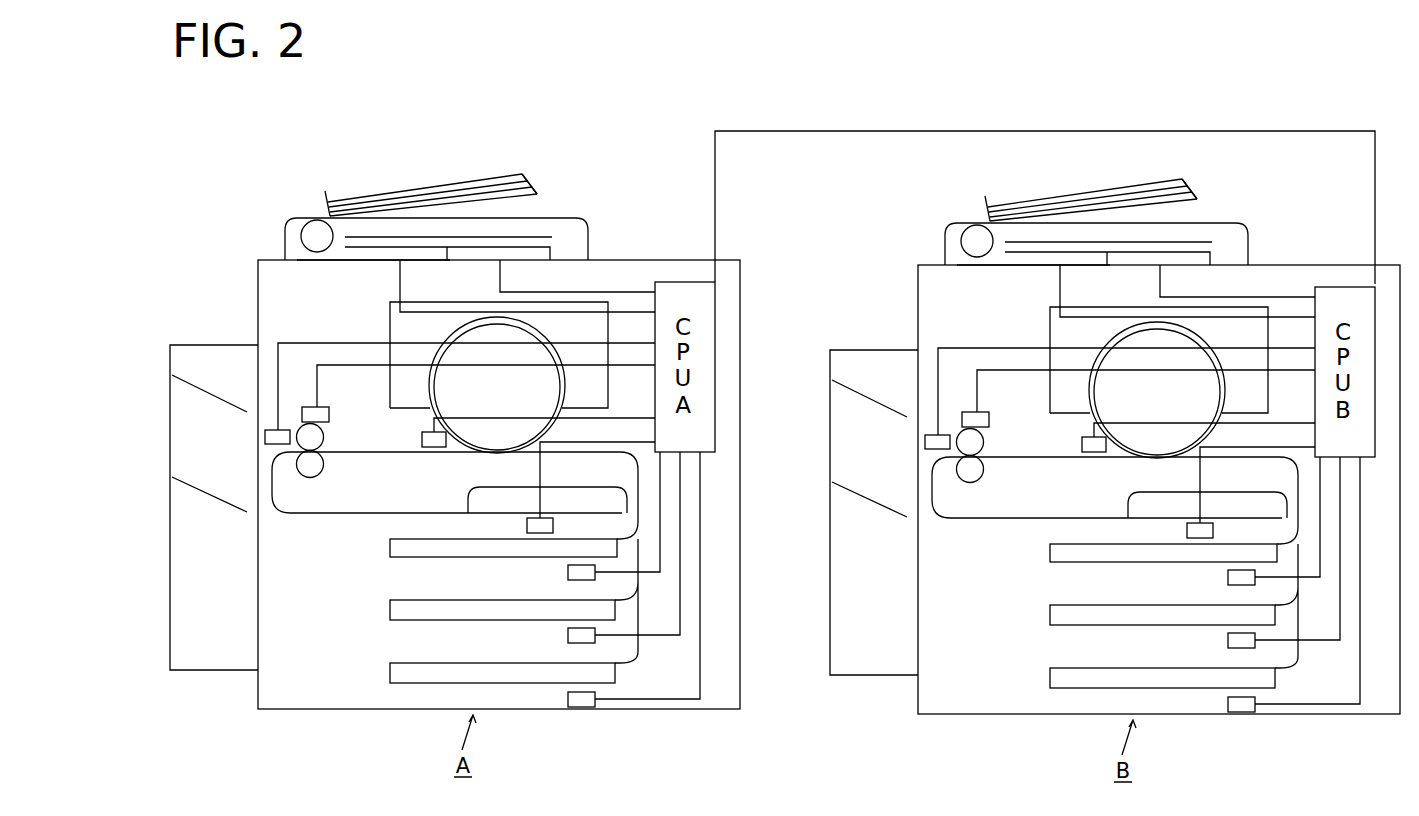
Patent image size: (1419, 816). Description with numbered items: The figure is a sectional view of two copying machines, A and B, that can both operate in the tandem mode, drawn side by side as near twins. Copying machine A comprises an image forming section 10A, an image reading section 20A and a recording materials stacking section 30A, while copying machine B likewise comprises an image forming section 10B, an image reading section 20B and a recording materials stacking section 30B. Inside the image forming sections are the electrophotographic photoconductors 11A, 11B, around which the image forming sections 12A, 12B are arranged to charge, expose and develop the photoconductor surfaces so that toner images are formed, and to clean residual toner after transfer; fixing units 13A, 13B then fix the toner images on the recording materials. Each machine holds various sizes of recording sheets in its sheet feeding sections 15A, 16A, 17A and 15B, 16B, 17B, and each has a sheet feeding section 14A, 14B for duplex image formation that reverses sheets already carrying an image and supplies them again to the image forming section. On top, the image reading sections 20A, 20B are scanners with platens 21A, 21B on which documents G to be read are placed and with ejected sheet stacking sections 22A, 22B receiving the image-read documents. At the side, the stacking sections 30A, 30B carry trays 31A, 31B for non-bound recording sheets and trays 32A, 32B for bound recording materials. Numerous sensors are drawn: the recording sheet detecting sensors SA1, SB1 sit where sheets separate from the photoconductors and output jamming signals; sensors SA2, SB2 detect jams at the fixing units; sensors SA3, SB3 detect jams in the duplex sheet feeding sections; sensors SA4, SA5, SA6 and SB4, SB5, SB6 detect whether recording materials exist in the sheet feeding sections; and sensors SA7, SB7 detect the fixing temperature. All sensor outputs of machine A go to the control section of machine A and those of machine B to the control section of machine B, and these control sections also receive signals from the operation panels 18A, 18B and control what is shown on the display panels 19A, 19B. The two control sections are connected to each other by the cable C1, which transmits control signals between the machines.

The image forming section 10A is at (321, 710).
The image forming section 10B is at (1159, 511).
The recording materials stacking section 30A is at (208, 345).
The recording materials stacking section 30B is at (874, 485).
The tray 31A is at (197, 387).
The tray 31B is at (839, 400).
The tray 32A is at (197, 492).
The tray 32B is at (839, 500).
The image reading section 20A is at (558, 218).
The image reading section 20B is at (1100, 215).
The ejected sheet stacking section 22A is at (368, 236).
The ejected sheet stacking section 22B is at (1086, 206).
The platen 21A is at (528, 192).
The platen 21B is at (1181, 172).
The display panel 19A is at (552, 256).
The display panel 19B is at (1155, 246).
The operation panel 18A is at (370, 264).
The operation panel 18B is at (1033, 283).
The document G is at (435, 190).
The image forming section 12A is at (390, 334).
The image forming section 12B is at (1119, 360).
The photoconductor 11A is at (497, 385).
The photoconductor 11B is at (1157, 390).
The fixing unit 13A is at (326, 441).
The fixing unit 13B is at (1000, 453).
The sheet feeding section for duplex image formation 14A is at (297, 515).
The sheet feeding section for duplex image formation 14B is at (1115, 562).
The sheet feeding section 15A is at (390, 545).
The sheet feeding section 15B is at (1134, 548).
The sheet feeding section 16A is at (390, 610).
The sheet feeding section 16B is at (1132, 612).
The sheet feeding section 17A is at (390, 675).
The sheet feeding section 17B is at (1132, 677).
The recording sheet detecting sensor SA1 is at (438, 447).
The sensor SA2 is at (265, 437).
The sensor SA3 is at (527, 527).
The sensor SA4 is at (568, 573).
The sensor SA5 is at (568, 637).
The sensor SA6 is at (583, 708).
The sensor SA7 is at (302, 413).
The recording sheet detecting sensor SB1 is at (1191, 460).
The sensor SB2 is at (1084, 401).
The sensor SB3 is at (1218, 494).
The sensor SB4 is at (1236, 526).
The sensor SB5 is at (1246, 558).
The sensor SB6 is at (1292, 604).
The sensor SB7 is at (1088, 396).
The cable C1 is at (825, 131).